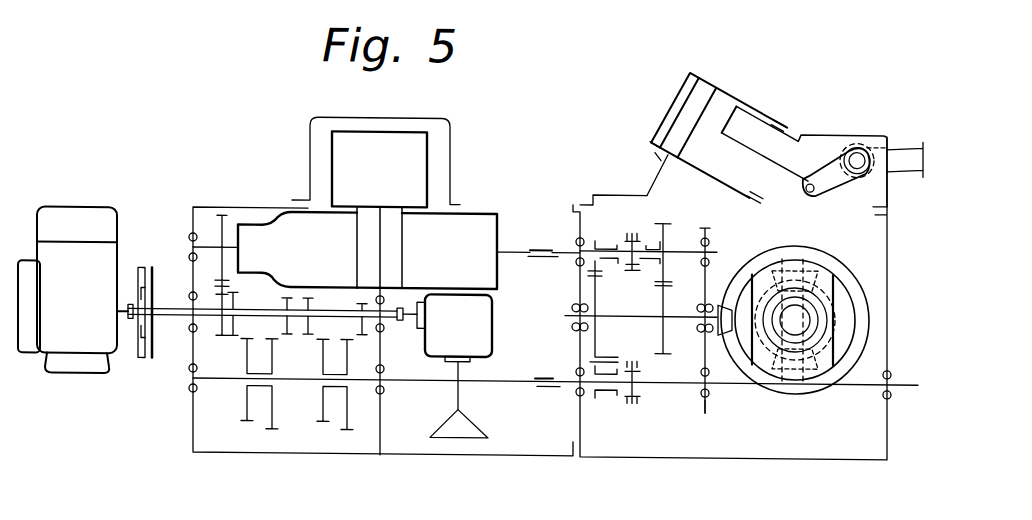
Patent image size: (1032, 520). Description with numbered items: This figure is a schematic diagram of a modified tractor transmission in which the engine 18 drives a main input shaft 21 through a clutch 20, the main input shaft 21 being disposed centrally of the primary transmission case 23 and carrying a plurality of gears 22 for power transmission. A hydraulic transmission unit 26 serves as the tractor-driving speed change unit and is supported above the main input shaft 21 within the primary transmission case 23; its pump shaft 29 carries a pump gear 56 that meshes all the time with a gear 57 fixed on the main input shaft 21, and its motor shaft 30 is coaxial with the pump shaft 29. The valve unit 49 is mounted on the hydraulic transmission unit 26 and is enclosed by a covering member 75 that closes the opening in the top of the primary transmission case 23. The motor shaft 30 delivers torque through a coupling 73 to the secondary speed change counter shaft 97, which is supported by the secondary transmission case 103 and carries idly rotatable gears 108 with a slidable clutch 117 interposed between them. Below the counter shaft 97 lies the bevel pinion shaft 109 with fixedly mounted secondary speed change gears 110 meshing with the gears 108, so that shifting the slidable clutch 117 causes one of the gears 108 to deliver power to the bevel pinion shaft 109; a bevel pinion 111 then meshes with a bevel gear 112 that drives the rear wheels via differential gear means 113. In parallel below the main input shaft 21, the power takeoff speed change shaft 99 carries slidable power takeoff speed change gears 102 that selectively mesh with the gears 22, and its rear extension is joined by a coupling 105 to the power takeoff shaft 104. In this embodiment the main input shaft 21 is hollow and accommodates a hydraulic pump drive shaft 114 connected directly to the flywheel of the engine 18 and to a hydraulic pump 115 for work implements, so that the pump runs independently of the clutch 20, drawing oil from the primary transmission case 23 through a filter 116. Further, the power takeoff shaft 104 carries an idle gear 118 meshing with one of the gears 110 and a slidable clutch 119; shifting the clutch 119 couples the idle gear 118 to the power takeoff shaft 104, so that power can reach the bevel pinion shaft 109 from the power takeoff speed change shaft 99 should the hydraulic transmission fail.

The engine 18 is at (82, 350).
The clutch 20 is at (140, 362).
The main input shaft 21 is at (274, 303).
The gears 22 is at (288, 338).
The primary transmission case 23 is at (290, 454).
The hydraulic transmission unit 26 is at (463, 217).
The pump shaft 29 is at (231, 245).
The motor shaft 30 is at (512, 246).
The valve unit 49 is at (381, 129).
The pump gear 56 is at (218, 220).
The gear 57 is at (218, 336).
The coupling 73 is at (545, 246).
The covering member 75 is at (352, 117).
The secondary speed change counter shaft 97 is at (681, 243).
The power takeoff speed change shaft 99 is at (427, 383).
The power takeoff speed change gears 102 is at (318, 412).
The secondary transmission case 103 is at (697, 455).
The power takeoff shaft 104 is at (738, 383).
The coupling 105 is at (540, 388).
The gears 108 is at (655, 217).
The bevel pinion shaft 109 is at (648, 313).
The secondary speed change gears 110 is at (601, 347).
The bevel pinion 111 is at (717, 300).
The bevel gear 112 is at (803, 237).
The differential gear means 113 is at (824, 273).
The hydraulic pump drive shaft 114 is at (396, 318).
The hydraulic pump 115 is at (480, 312).
The filter 116 is at (472, 425).
The slidable clutch 117 is at (637, 231).
The idle gear 118 is at (600, 398).
The slidable clutch 119 is at (638, 398).